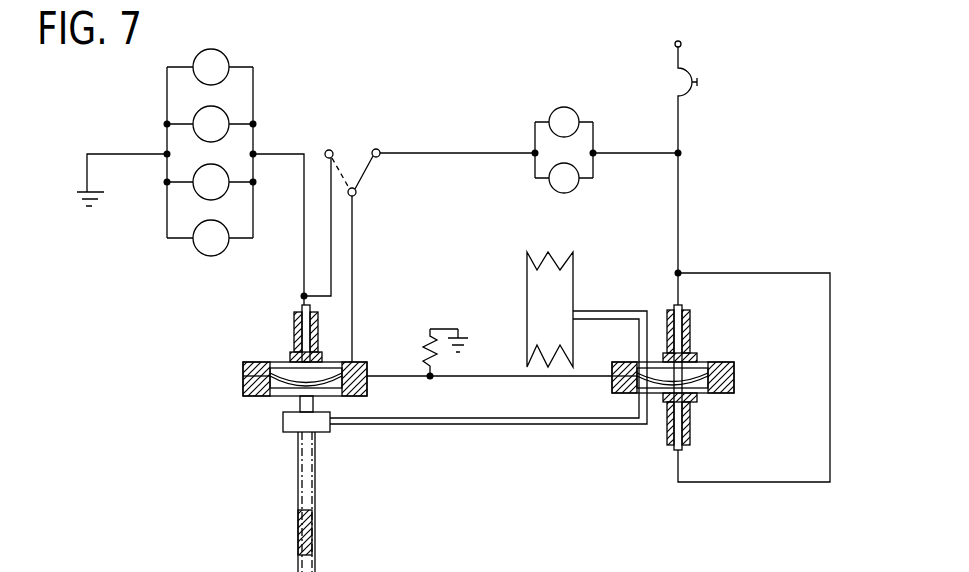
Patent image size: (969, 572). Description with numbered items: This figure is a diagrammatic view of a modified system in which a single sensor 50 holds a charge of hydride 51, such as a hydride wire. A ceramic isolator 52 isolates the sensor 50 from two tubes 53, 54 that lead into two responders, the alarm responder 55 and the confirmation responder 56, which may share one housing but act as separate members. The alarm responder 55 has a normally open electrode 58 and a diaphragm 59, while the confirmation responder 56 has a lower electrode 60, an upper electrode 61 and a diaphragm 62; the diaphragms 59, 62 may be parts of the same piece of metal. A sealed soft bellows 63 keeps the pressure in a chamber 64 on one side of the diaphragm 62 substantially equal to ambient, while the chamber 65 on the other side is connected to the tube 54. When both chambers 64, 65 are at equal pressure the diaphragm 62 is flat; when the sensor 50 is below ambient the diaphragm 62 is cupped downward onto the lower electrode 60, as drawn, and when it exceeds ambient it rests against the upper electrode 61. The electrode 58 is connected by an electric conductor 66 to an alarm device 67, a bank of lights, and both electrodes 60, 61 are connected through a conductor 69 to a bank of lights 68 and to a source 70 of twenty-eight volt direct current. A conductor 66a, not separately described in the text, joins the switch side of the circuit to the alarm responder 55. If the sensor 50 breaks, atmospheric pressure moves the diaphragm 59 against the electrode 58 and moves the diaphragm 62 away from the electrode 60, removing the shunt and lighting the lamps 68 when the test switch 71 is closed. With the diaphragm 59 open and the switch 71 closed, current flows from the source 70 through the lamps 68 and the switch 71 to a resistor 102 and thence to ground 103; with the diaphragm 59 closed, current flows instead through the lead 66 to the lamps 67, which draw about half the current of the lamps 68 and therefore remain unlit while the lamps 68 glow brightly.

The sensor 50 is at (310, 495).
The charge of hydride 51 is at (308, 530).
The ceramic isolator 52 is at (295, 423).
The tube 53 is at (303, 402).
The tube 54 is at (488, 426).
The alarm responder 55 is at (245, 386).
The confirmation responder 56 is at (724, 388).
The normally open electrode 58 is at (305, 360).
The diaphragm 59 is at (300, 366).
The lower electrode 60 is at (690, 402).
The upper electrode 61 is at (682, 360).
The diaphragm 62 is at (706, 363).
The sealed soft bellows 63 is at (527, 285).
The chamber 64 is at (653, 368).
The chamber 65 is at (706, 381).
The electric conductor 66 is at (303, 210).
The conductor branch 66a is at (332, 238).
The alarm device 67 is at (254, 96).
The bank of lights 68 is at (535, 130).
The conductor 69 is at (680, 200).
The source of twenty-eight volt direct current 70 is at (675, 46).
The test switch 71 is at (362, 156).
The resistor 102 is at (430, 341).
The ground 103 is at (462, 340).